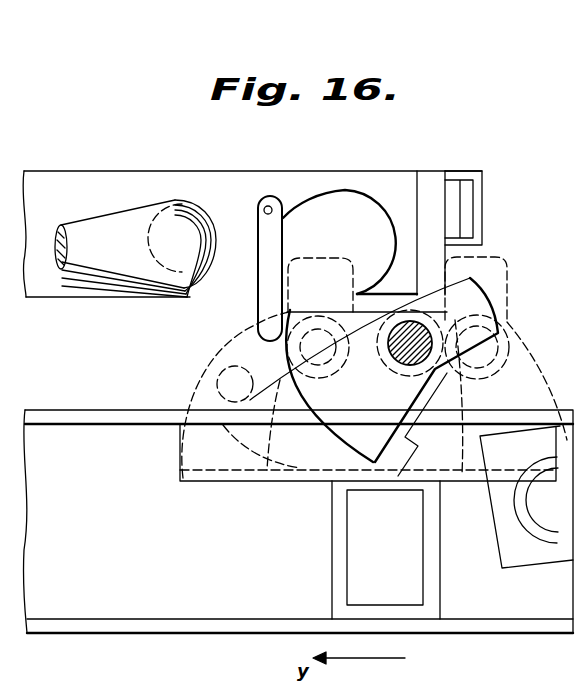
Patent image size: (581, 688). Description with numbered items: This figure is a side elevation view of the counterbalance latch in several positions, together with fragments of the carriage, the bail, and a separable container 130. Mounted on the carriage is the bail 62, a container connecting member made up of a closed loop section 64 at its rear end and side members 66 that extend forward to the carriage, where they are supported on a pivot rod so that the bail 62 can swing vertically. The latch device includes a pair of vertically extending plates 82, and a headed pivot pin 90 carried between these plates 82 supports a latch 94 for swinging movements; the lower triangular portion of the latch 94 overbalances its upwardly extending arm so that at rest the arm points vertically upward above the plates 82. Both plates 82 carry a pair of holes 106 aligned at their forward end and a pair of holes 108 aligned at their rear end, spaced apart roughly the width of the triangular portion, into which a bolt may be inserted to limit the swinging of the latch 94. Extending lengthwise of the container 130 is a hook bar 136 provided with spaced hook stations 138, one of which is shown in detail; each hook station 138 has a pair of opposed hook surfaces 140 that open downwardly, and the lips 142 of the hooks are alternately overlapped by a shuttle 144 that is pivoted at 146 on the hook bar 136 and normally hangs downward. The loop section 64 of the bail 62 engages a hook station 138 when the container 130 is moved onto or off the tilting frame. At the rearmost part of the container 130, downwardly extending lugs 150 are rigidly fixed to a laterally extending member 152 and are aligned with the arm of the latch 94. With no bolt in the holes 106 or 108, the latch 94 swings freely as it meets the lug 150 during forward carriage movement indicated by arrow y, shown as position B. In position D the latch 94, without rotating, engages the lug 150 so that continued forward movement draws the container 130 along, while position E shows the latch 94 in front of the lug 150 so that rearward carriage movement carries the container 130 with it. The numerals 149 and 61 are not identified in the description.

The hook bar 136 is at (137, 158).
The hook station 138 is at (190, 307).
The hook surface 140 is at (147, 248).
The lip 142 is at (362, 289).
The shuttle 144 is at (272, 227).
The pivot 146 is at (270, 206).
The sheet edge 149 is at (178, 287).
The lug 150 is at (427, 172).
The laterally extending member 152 is at (493, 155).
The container 130 is at (352, 268).
The latch 94 is at (373, 312).
The pivot pin 90 is at (455, 362).
The vertically extending plate 82 is at (374, 395).
The loop section 64 is at (238, 472).
The side member 66 is at (542, 568).
The bail 62 is at (93, 298).
The sheet 61 is at (212, 270).
The hole 106 is at (217, 384).
The hole 108 is at (390, 378).
The position E is at (304, 260).
The position B is at (415, 310).
The position D is at (508, 273).